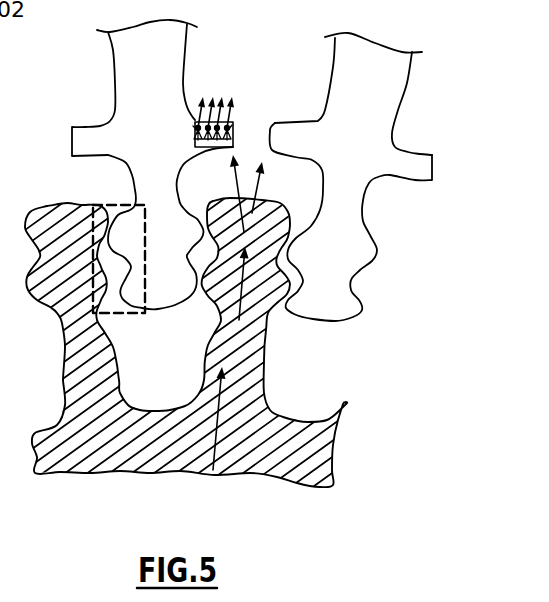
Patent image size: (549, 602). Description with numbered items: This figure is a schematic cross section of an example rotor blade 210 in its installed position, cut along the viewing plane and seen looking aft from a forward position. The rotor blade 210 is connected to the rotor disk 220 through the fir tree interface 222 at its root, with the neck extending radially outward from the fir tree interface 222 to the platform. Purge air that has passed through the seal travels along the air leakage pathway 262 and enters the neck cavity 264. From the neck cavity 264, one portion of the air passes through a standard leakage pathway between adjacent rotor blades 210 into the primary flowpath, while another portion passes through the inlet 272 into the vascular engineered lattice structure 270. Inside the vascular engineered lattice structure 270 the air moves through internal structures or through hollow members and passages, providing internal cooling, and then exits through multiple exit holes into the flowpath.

The rotor blade 210 is at (203, 73).
The rotor disk 220 is at (123, 447).
The fir tree interface 222 is at (60, 325).
The air leakage pathway 262 is at (216, 465).
The neck cavity 264 is at (290, 188).
The vascular engineered lattice structure 270 is at (233, 121).
The inlet 272 is at (180, 173).